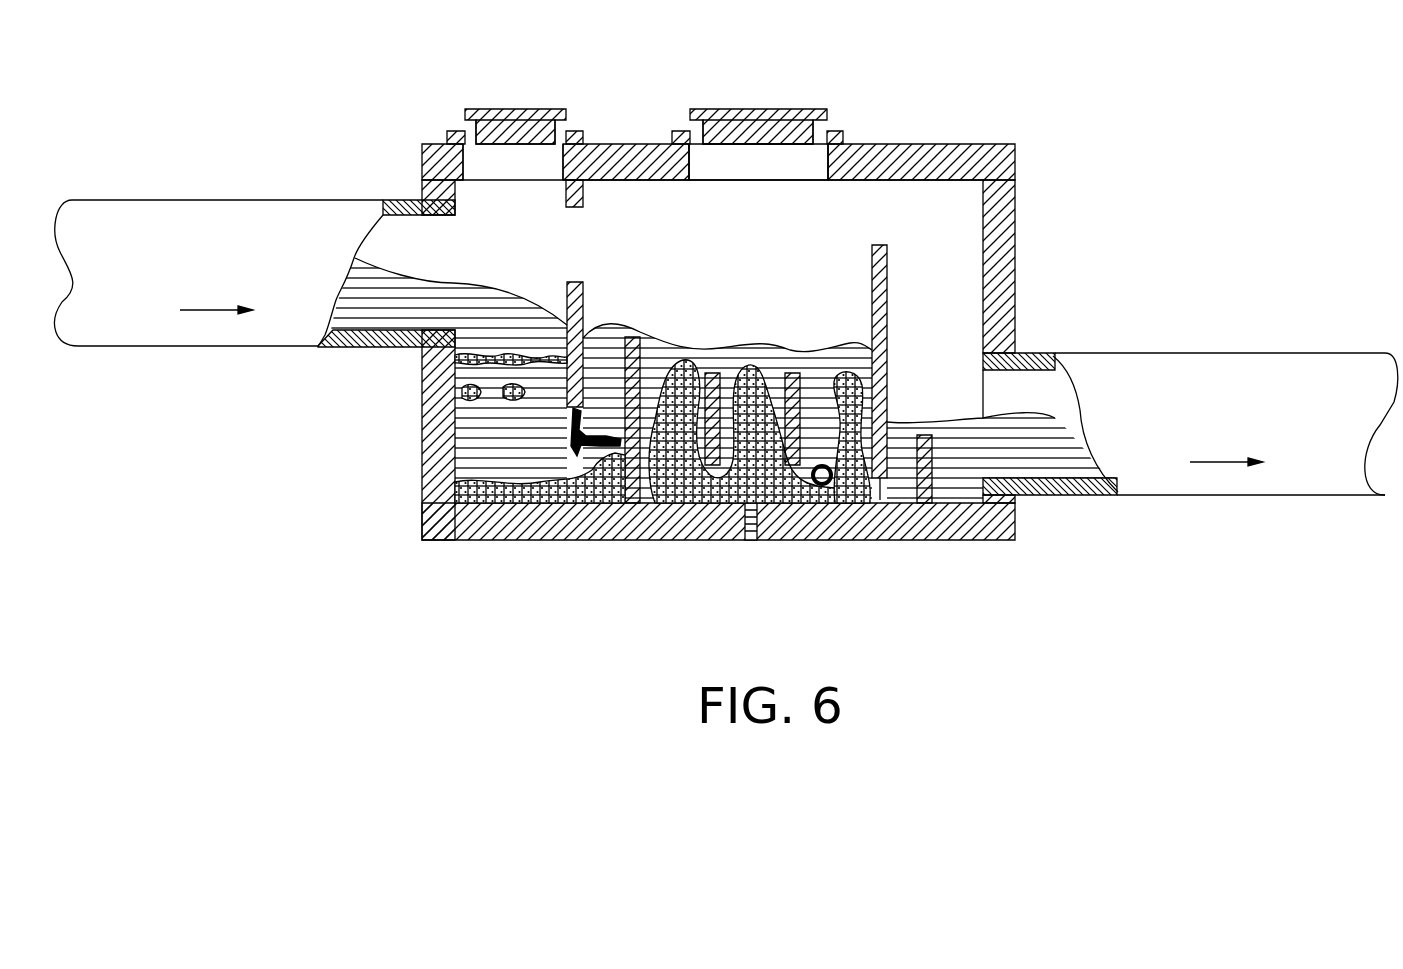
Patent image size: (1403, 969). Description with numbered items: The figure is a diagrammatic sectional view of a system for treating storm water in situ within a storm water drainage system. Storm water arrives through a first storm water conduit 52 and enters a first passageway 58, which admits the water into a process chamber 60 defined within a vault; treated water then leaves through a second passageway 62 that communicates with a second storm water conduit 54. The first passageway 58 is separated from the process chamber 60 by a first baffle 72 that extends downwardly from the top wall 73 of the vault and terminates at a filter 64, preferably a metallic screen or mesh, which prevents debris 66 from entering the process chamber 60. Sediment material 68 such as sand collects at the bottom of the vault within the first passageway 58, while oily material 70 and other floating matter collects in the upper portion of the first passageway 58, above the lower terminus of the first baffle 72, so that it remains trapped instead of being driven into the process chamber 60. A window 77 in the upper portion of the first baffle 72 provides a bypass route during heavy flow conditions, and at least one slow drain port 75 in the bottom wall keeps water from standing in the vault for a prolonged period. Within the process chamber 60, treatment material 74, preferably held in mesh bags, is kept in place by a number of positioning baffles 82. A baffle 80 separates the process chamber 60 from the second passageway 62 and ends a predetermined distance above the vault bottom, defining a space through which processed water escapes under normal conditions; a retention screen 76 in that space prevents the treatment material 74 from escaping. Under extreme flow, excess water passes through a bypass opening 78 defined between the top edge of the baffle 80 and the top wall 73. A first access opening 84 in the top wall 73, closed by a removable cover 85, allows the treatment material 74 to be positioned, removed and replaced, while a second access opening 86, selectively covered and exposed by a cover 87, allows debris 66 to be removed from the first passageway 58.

The first storm water conduit 52 is at (197, 202).
The second storm water conduit 54 is at (1238, 353).
The first passageway 58 is at (513, 226).
The process chamber 60 is at (740, 268).
The second passageway 62 is at (950, 369).
The filter 64 is at (588, 456).
The debris 66 is at (462, 393).
The sediment material 68 is at (546, 505).
The oily material 70 is at (455, 357).
The first baffle 72 is at (567, 297).
The top wall 73 is at (933, 155).
The treatment material 74 is at (826, 484).
The slow drain port 75 is at (663, 503).
The retention screen 76 is at (880, 487).
The window 77 is at (420, 178).
The bypass opening 78 is at (900, 233).
The baffle 80 is at (888, 280).
The positioning baffles 82 is at (715, 465).
The first access opening 84 is at (827, 158).
The removable cover 85 is at (775, 108).
The second access opening 86 is at (550, 137).
The cover 87 is at (485, 108).